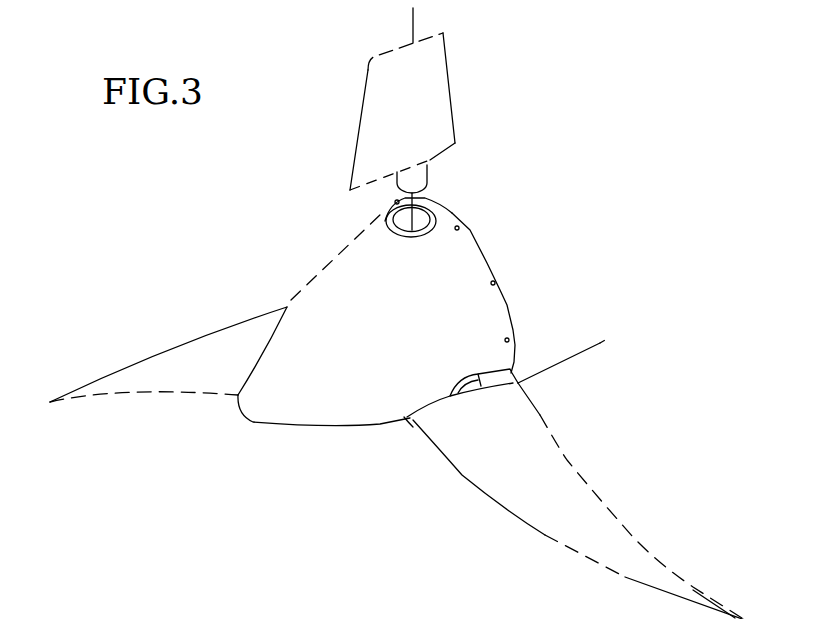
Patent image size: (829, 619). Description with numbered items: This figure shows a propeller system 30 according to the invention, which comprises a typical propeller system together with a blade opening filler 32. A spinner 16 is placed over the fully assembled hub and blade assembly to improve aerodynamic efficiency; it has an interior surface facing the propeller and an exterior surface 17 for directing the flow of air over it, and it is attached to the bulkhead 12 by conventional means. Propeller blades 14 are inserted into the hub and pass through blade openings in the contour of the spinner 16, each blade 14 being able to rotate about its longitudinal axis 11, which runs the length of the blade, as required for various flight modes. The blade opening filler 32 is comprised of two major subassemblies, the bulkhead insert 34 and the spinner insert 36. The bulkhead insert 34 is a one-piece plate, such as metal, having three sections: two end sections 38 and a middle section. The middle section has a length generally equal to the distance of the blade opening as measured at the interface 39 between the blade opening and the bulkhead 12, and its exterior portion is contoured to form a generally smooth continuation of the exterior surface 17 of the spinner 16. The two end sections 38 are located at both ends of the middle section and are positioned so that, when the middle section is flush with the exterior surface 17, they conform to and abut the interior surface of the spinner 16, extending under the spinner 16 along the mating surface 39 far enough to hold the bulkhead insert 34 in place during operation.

The longitudinal axis 11 is at (412, 22).
The bulkhead 12 is at (553, 345).
The propeller blade 14 is at (419, 127).
The spinner 16 is at (280, 405).
The exterior surface 17 is at (488, 315).
The propeller system 30 is at (317, 237).
The blade opening filler 32 is at (437, 203).
The bulkhead insert 34 is at (440, 214).
The spinner insert 36 is at (388, 217).
The end sections 38 is at (273, 609).
The interface 39 is at (490, 263).